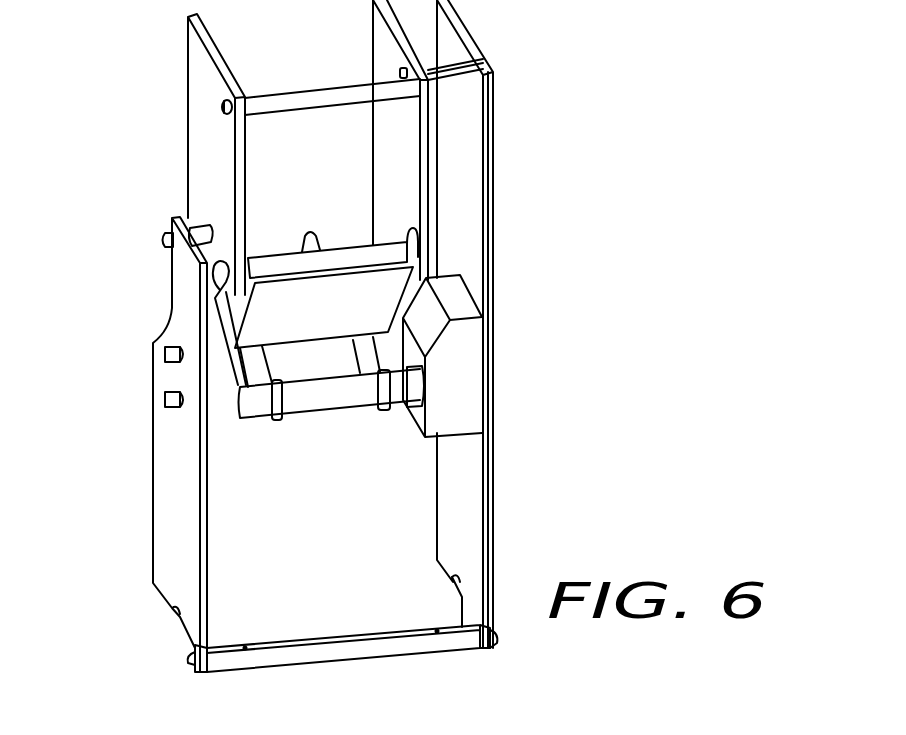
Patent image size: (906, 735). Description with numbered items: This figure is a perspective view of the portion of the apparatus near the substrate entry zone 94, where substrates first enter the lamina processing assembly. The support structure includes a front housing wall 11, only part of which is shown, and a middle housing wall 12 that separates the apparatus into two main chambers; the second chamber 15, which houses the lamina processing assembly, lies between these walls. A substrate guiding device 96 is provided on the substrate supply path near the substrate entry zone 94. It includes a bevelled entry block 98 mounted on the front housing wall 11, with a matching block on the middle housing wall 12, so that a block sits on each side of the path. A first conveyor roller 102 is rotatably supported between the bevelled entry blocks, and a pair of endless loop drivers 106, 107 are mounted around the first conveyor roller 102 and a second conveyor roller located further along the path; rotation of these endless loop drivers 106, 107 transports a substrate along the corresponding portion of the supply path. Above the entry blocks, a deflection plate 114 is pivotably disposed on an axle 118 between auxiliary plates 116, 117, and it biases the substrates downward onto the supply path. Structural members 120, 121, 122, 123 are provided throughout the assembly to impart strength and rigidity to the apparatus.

The front housing wall 11 is at (177, 523).
The middle housing wall 12 is at (493, 483).
The second chamber 15 is at (333, 585).
The substrate entry zone 94 is at (303, 360).
The substrate guiding device 96 is at (118, 393).
The bevelled entry block 98 is at (225, 450).
The first conveyor roller 102 is at (340, 392).
The endless loop driver 106 is at (280, 422).
The endless loop driver 107 is at (387, 408).
The deflection plate 114 is at (335, 323).
The auxiliary plate 116 is at (193, 122).
The auxiliary plate 117 is at (378, 46).
The axle 118 is at (269, 258).
The structural member 120 is at (337, 653).
The structural member 121 is at (200, 220).
The structural member 122 is at (313, 103).
The structural member 123 is at (457, 72).